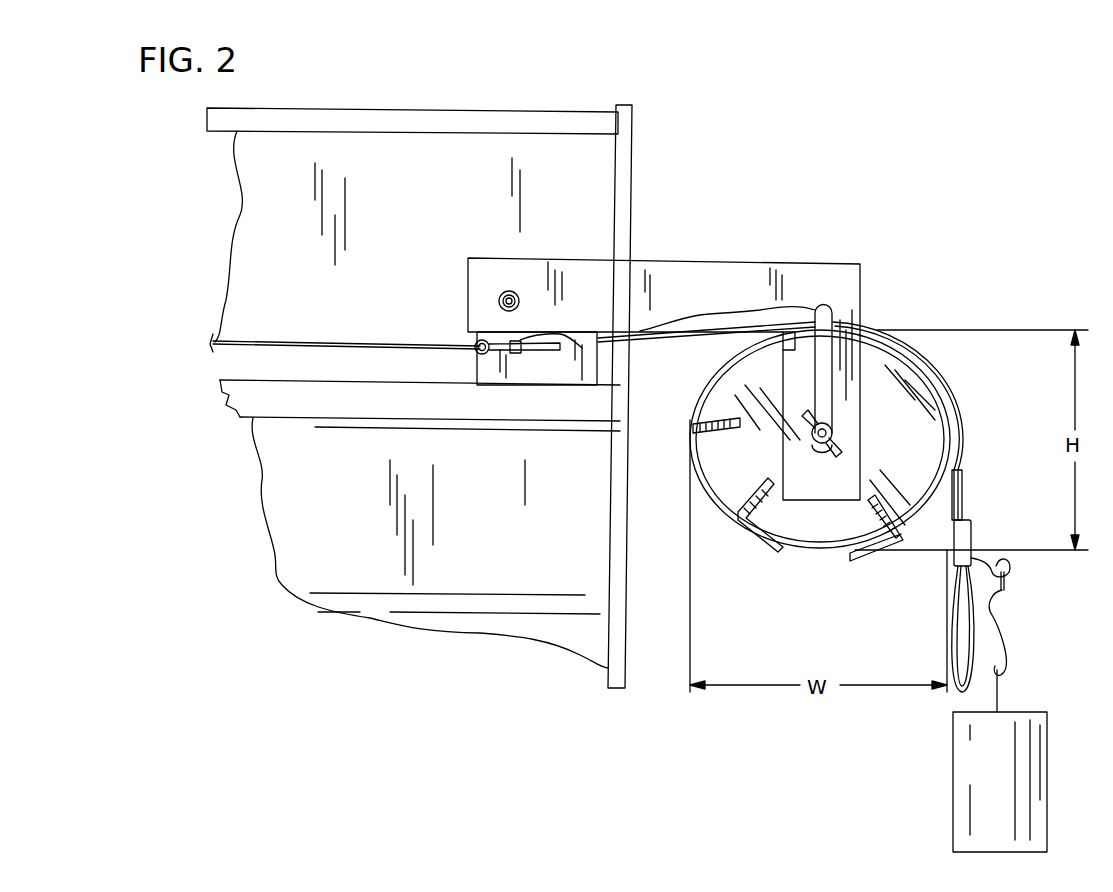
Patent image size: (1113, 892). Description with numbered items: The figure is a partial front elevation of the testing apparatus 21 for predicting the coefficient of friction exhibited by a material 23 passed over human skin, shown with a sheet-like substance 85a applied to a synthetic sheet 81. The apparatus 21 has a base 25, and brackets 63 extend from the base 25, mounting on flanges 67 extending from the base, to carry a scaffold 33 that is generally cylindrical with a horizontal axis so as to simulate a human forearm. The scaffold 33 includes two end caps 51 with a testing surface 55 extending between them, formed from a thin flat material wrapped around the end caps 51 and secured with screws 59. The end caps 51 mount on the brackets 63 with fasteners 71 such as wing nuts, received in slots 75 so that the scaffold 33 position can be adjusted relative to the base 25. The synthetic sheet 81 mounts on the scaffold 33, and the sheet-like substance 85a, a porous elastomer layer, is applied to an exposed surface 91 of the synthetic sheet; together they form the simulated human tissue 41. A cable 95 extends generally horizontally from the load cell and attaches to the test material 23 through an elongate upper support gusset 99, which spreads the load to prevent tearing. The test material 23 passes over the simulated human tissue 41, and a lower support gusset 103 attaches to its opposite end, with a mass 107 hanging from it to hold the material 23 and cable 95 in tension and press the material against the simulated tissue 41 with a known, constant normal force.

The apparatus 21 is at (466, 92).
The base 25 is at (290, 575).
The cable 95 is at (340, 340).
The upper support gusset 99 is at (525, 355).
The flanges 67 is at (530, 368).
The brackets 63 is at (700, 282).
The slots 75 is at (862, 268).
The exposed surface 91 is at (720, 338).
The fasteners 71 is at (842, 452).
The scaffold 33 is at (818, 550).
The material 23 is at (942, 392).
The sheet-like substance 85a is at (955, 418).
The synthetic sheet 81 is at (958, 478).
The simulated human tissue 41 is at (928, 368).
The lower support gusset 103 is at (963, 545).
The mass 107 is at (1005, 776).
The testing surface 55 is at (703, 482).
The screws 59 is at (768, 530).
The end caps 51 is at (850, 543).